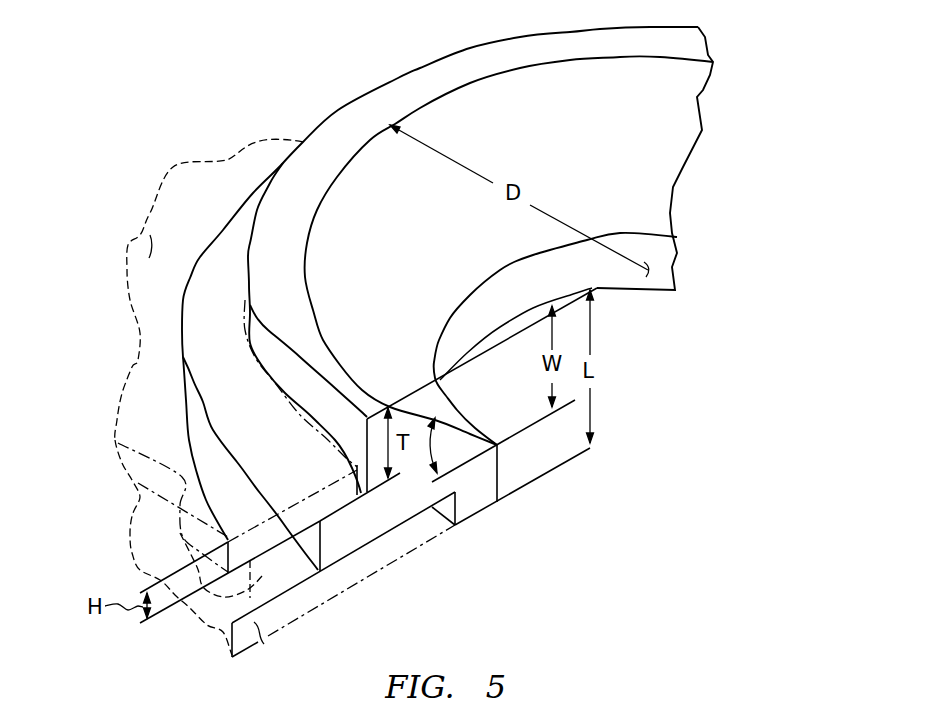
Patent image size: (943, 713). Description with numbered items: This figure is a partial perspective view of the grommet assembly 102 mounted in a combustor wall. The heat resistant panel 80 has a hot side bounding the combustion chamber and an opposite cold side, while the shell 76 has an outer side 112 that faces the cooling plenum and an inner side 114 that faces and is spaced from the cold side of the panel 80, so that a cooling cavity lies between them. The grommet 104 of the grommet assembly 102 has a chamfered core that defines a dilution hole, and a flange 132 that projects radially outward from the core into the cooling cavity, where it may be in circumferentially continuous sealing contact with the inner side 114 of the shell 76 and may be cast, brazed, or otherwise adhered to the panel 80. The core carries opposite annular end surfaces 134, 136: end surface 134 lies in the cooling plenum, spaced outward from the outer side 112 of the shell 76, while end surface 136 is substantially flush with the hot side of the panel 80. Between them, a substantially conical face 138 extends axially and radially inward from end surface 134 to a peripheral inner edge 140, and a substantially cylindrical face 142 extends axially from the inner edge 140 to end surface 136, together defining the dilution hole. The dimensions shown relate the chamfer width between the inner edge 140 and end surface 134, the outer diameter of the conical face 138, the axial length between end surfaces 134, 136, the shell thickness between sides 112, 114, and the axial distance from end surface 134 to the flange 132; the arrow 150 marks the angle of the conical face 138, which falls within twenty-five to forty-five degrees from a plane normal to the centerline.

The shell 76 is at (117, 452).
The heat resistant panel 80 is at (272, 646).
The grommet assembly 102 is at (495, 299).
The grommet 104 is at (278, 120).
The outer side 112 is at (142, 225).
The inner side 114 is at (204, 628).
The flange 132 is at (347, 528).
The annular end surface 134 is at (417, 97).
The annular end surface 136 is at (482, 513).
The conical face 138 is at (667, 152).
The inner edge 140 is at (657, 235).
The cylindrical face 142 is at (498, 465).
The angle 150 is at (433, 445).